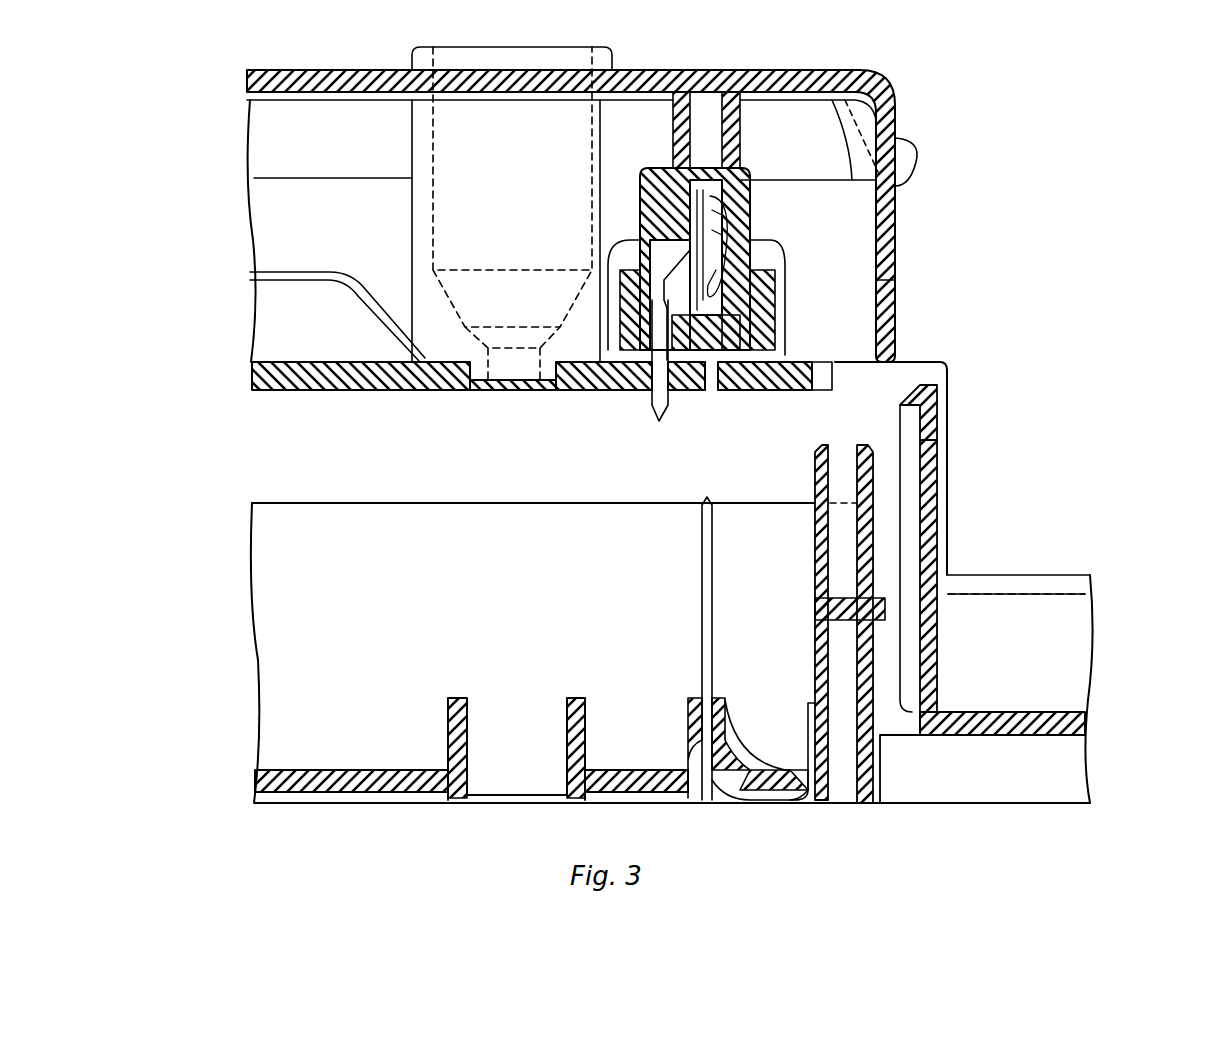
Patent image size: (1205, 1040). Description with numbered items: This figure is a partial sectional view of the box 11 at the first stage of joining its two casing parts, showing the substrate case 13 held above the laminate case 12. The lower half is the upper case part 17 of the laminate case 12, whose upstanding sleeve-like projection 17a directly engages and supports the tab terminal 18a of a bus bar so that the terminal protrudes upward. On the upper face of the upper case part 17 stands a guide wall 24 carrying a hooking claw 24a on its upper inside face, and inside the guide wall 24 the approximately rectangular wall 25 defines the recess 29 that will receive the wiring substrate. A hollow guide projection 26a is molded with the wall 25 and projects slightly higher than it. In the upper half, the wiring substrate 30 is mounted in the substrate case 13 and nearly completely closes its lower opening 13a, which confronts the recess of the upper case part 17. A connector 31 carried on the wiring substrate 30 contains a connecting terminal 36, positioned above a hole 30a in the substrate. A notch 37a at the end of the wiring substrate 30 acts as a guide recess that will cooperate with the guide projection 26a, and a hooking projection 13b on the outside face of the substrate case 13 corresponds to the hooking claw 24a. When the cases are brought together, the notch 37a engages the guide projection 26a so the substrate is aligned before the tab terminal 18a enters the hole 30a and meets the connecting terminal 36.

The box 11 is at (1072, 76).
The laminate case 12 is at (1082, 700).
The substrate case 13 is at (684, 72).
The lower opening 13a is at (888, 330).
The hooking projection 13b is at (912, 150).
The upper case part 17 is at (338, 770).
The sleeve-like projection 17a is at (726, 766).
The tab terminal 18a is at (704, 604).
The guide wall 24 is at (940, 462).
The hooking claw 24a is at (905, 408).
The wall 25 is at (258, 528).
The guide projection 26a is at (818, 553).
The recess 29 is at (458, 587).
The wiring substrate 30 is at (368, 392).
The hole 30a is at (710, 392).
The connector 31 is at (750, 214).
The connecting terminal 36 is at (745, 246).
The notch 37a is at (820, 392).